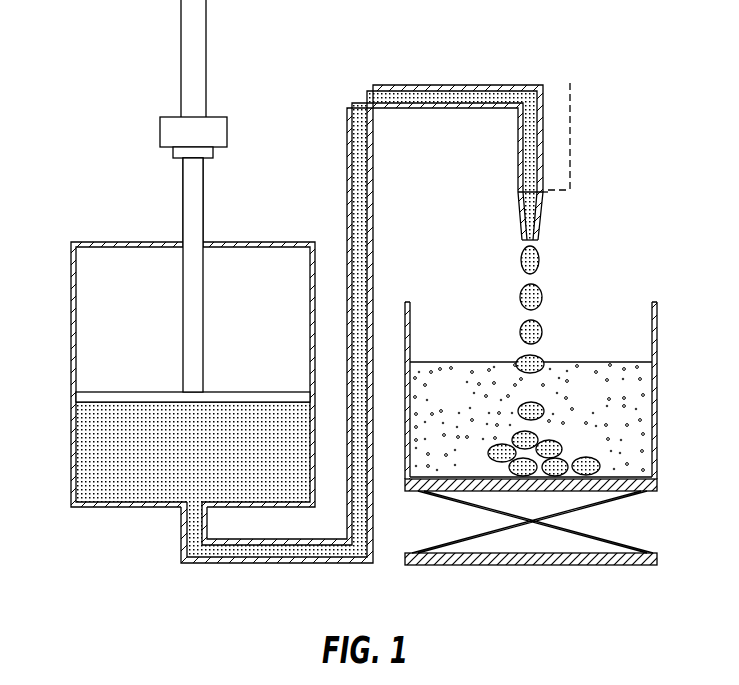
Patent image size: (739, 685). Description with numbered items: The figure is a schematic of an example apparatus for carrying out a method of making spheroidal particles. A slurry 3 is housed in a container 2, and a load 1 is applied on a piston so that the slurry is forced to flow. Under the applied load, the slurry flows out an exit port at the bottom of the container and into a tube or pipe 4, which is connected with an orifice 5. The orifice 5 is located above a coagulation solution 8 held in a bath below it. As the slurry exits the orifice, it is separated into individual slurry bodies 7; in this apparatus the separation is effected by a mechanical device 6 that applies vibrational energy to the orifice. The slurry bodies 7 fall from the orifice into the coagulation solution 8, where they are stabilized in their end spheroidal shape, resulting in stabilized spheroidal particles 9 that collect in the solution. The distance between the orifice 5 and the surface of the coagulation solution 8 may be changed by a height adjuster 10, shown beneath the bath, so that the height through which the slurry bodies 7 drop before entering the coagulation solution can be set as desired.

The load 1 is at (236, 92).
The container 2 is at (131, 242).
The slurry 3 is at (203, 464).
The tube or pipe 4 is at (262, 564).
The orifice 5 is at (521, 215).
The mechanical device 6 is at (595, 177).
The slurry bodies 7 is at (543, 296).
The coagulation solution 8 is at (452, 409).
The stabilized spheroidal particles 9 is at (544, 411).
The height adjuster 10 is at (401, 504).